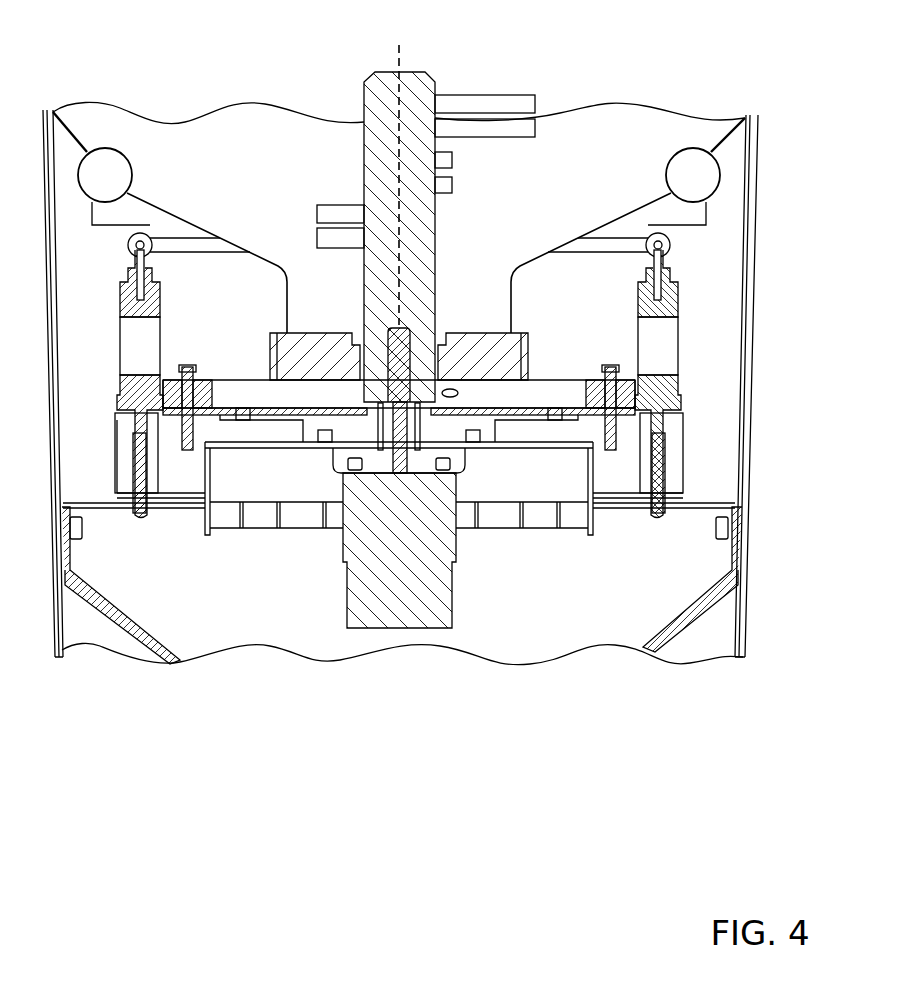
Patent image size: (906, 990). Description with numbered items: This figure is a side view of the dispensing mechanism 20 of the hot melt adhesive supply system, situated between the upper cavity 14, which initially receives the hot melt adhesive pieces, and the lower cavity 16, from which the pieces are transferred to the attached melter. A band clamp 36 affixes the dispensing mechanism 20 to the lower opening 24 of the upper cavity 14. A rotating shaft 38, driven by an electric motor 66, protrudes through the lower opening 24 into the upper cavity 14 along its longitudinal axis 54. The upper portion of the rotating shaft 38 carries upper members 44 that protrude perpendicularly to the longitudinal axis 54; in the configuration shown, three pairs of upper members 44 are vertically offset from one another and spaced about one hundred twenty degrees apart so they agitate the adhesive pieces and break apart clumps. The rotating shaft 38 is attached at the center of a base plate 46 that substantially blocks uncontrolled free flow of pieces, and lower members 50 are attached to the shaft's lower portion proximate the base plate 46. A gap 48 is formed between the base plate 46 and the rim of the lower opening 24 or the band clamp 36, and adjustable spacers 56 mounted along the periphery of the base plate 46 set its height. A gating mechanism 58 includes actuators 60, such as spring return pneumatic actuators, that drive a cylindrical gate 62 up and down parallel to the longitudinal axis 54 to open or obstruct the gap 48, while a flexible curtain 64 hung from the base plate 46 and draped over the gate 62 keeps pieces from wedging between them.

The upper cavity 14 is at (212, 178).
The lower cavity 16 is at (145, 603).
The dispensing mechanism 20 is at (725, 375).
The lower opening 24 is at (338, 325).
The band clamp 36 is at (537, 355).
The rotating shaft 38 is at (382, 178).
The upper members 44 is at (447, 183).
The base plate 46 is at (260, 418).
The gap 48 is at (278, 384).
The lower members 50 is at (450, 392).
The longitudinal axis 54 is at (399, 174).
The adjustable spacers 56 is at (182, 393).
The gating mechanism 58 is at (707, 460).
The actuators 60 is at (135, 303).
The gate 62 is at (488, 476).
The flexible curtain 64 is at (568, 518).
The electric motor 66 is at (423, 545).